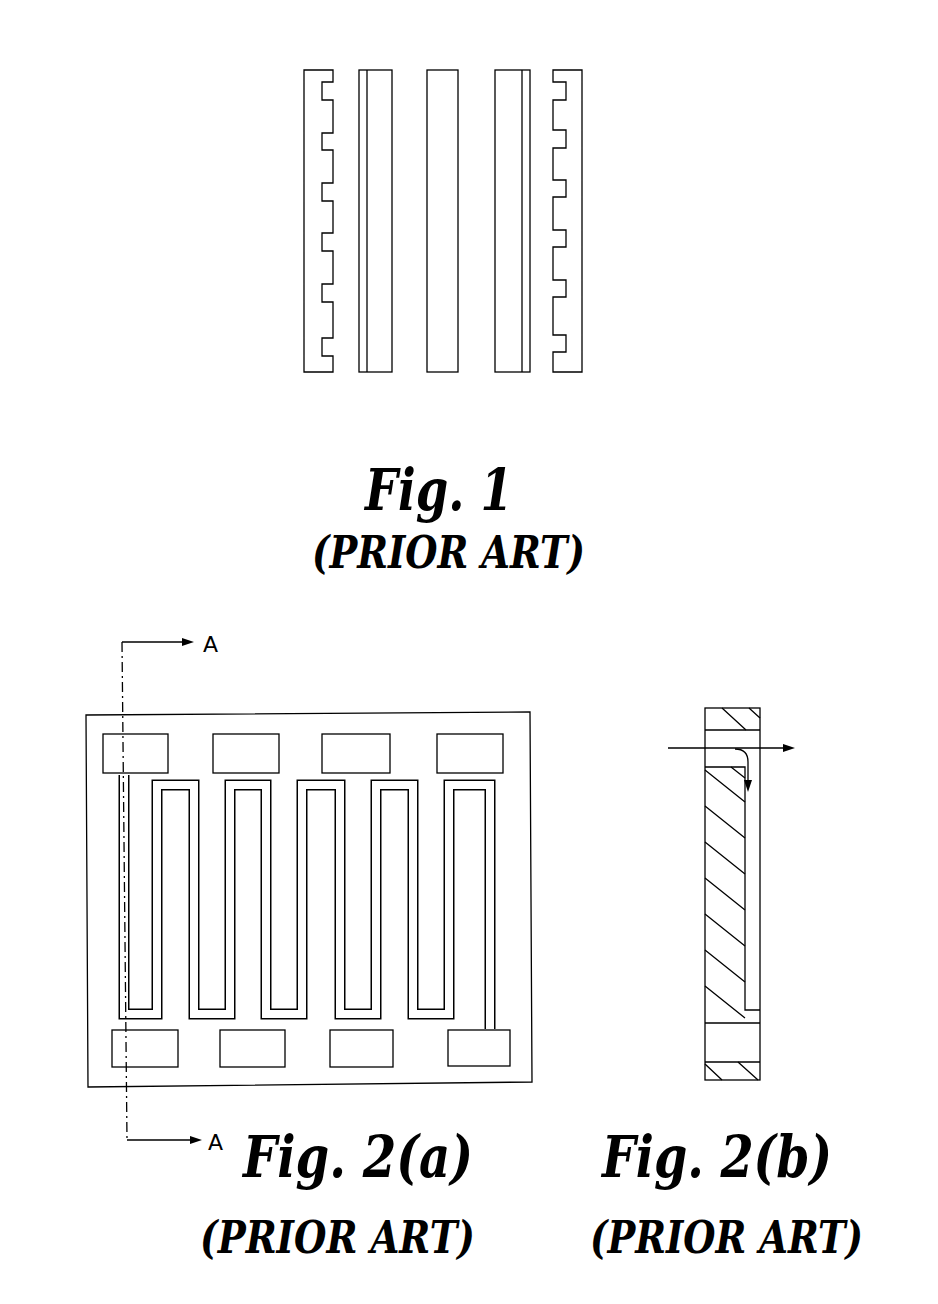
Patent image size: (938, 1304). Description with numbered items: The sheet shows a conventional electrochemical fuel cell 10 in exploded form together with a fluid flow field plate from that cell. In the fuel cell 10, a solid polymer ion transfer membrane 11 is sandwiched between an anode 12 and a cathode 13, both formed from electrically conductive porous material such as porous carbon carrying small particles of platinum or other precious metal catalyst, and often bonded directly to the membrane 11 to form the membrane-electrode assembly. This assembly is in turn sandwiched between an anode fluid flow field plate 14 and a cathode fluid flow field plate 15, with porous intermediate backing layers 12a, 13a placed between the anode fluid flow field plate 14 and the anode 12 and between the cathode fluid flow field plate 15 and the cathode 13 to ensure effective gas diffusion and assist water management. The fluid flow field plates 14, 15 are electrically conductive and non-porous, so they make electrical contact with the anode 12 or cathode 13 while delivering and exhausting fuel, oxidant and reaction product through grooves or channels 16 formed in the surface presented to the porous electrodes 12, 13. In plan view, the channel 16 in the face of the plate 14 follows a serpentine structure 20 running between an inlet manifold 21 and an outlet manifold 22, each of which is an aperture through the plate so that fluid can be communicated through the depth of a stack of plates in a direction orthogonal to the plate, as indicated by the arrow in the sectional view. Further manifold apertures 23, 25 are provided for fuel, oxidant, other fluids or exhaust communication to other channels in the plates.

In FIG. 1, the fuel cell 10 is at (303, 55).
In FIG. 1, the solid polymer ion transfer membrane 11 is at (443, 358).
In FIG. 1, the anode 12 is at (380, 368).
In FIG. 1, the intermediate backing layer 12a is at (366, 72).
In FIG. 1, the cathode 13 is at (510, 358).
In FIG. 1, the intermediate backing layer 13a is at (525, 70).
In FIG. 1, the anode fluid flow field plate 14 is at (304, 370).
In FIG. 2A, the anode fluid flow field plate 14 is at (516, 746).
In FIG. 2B, the anode fluid flow field plate 14 is at (710, 893).
In FIG. 1, the cathode fluid flow field plate 15 is at (580, 372).
In FIG. 1, the grooves or channels 16 is at (330, 140).
In FIG. 2A, the grooves or channels 16 is at (157, 870).
In FIG. 2B, the grooves or channels 16 is at (752, 915).
In FIG. 2A, the serpentine structure 20 is at (460, 850).
In FIG. 2A, the inlet manifold 21 is at (143, 738).
In FIG. 2B, the inlet manifold 21 is at (718, 742).
In FIG. 2A, the outlet manifold 22 is at (490, 1048).
In FIG. 2A, the manifold aperture 23 is at (355, 735).
In FIG. 2A, the manifold aperture 25 is at (245, 735).